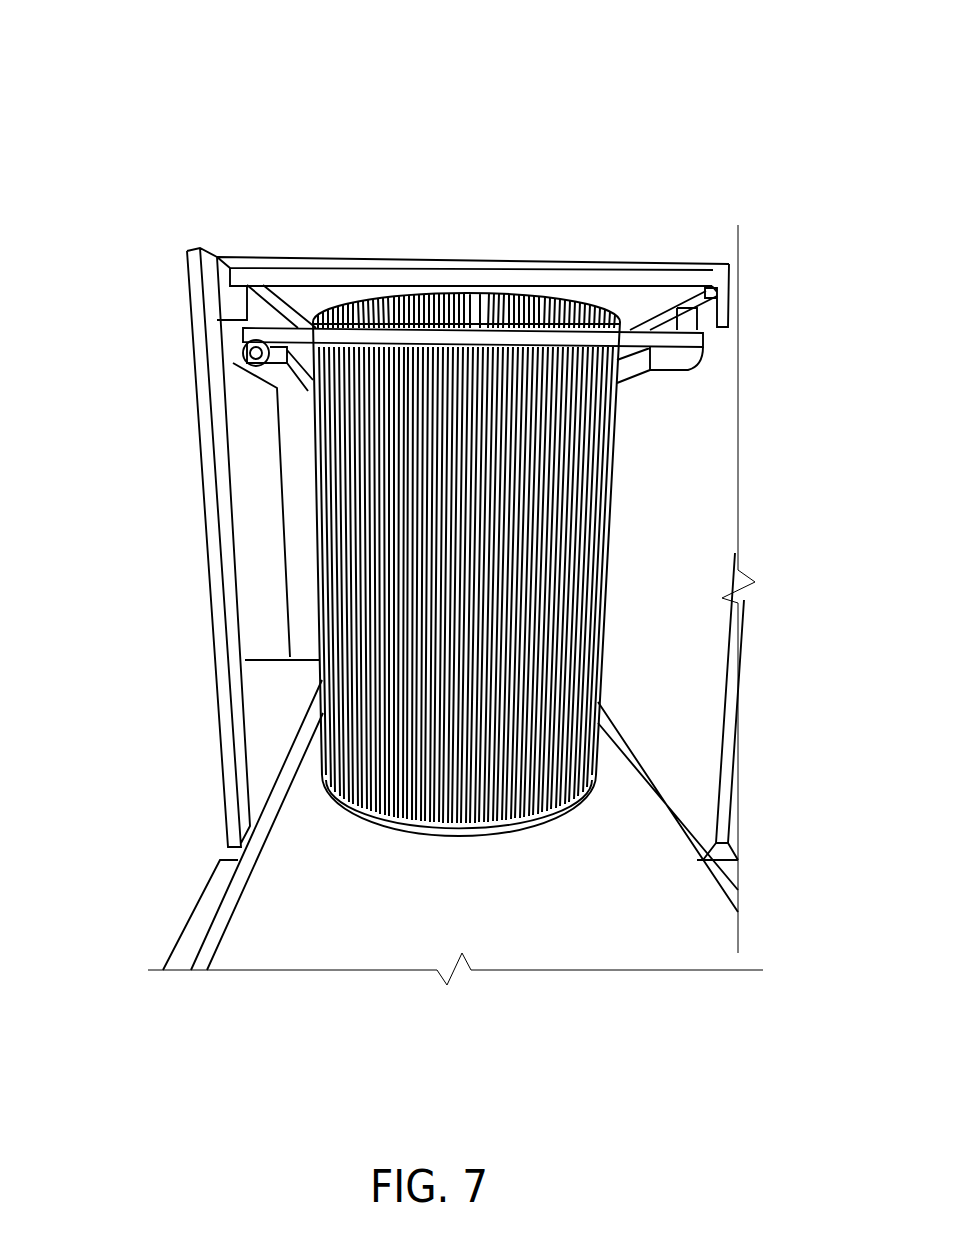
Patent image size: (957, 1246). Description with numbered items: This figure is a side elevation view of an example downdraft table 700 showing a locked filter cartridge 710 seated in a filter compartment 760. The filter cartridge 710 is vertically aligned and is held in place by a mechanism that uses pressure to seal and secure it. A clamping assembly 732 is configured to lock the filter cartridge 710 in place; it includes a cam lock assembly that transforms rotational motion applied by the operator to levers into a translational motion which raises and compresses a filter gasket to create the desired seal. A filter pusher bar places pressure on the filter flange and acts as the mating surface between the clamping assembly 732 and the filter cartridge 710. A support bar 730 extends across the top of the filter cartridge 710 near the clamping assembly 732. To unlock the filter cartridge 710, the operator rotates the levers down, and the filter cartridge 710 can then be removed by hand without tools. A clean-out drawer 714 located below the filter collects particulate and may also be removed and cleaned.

The downdraft table 700 is at (134, 52).
The filter cartridge 710 is at (568, 621).
The clean-out drawer 714 is at (357, 926).
The support bar 730 is at (667, 338).
The clamping assembly 732 is at (253, 385).
The filter compartment 760 is at (690, 510).